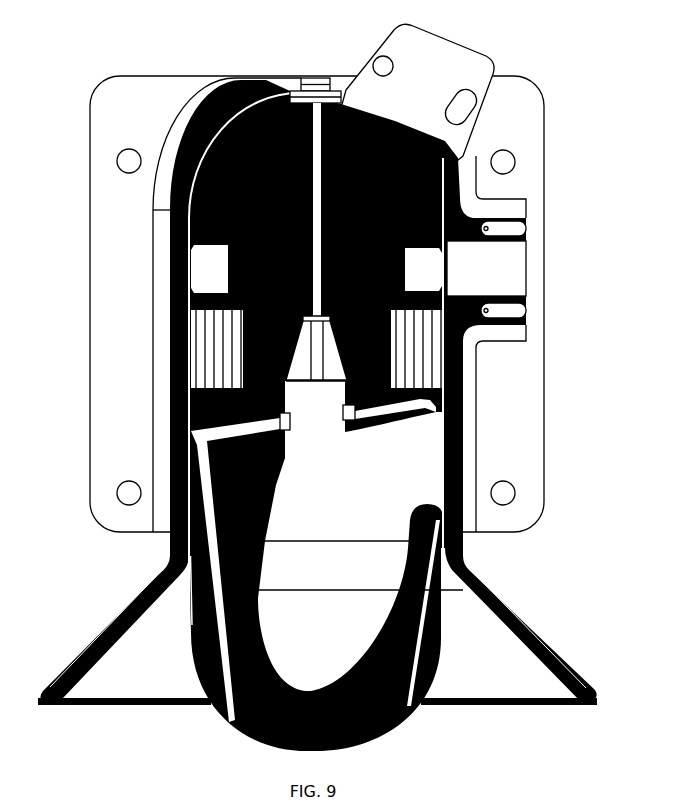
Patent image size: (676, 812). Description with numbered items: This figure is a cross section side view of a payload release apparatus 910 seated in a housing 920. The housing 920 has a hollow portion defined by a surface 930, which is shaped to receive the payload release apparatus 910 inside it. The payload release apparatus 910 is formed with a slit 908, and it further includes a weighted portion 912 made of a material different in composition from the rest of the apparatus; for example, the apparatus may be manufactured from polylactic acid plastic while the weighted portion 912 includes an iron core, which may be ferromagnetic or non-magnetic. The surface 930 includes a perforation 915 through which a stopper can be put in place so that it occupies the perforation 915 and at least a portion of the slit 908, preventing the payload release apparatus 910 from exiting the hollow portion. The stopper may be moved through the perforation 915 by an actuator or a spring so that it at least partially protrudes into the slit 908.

The slit 908 is at (423, 269).
The payload release apparatus 910 is at (318, 414).
The weighted portion 912 is at (317, 349).
The perforation 915 is at (486, 269).
The housing 920 is at (341, 304).
The surface 930 is at (317, 636).